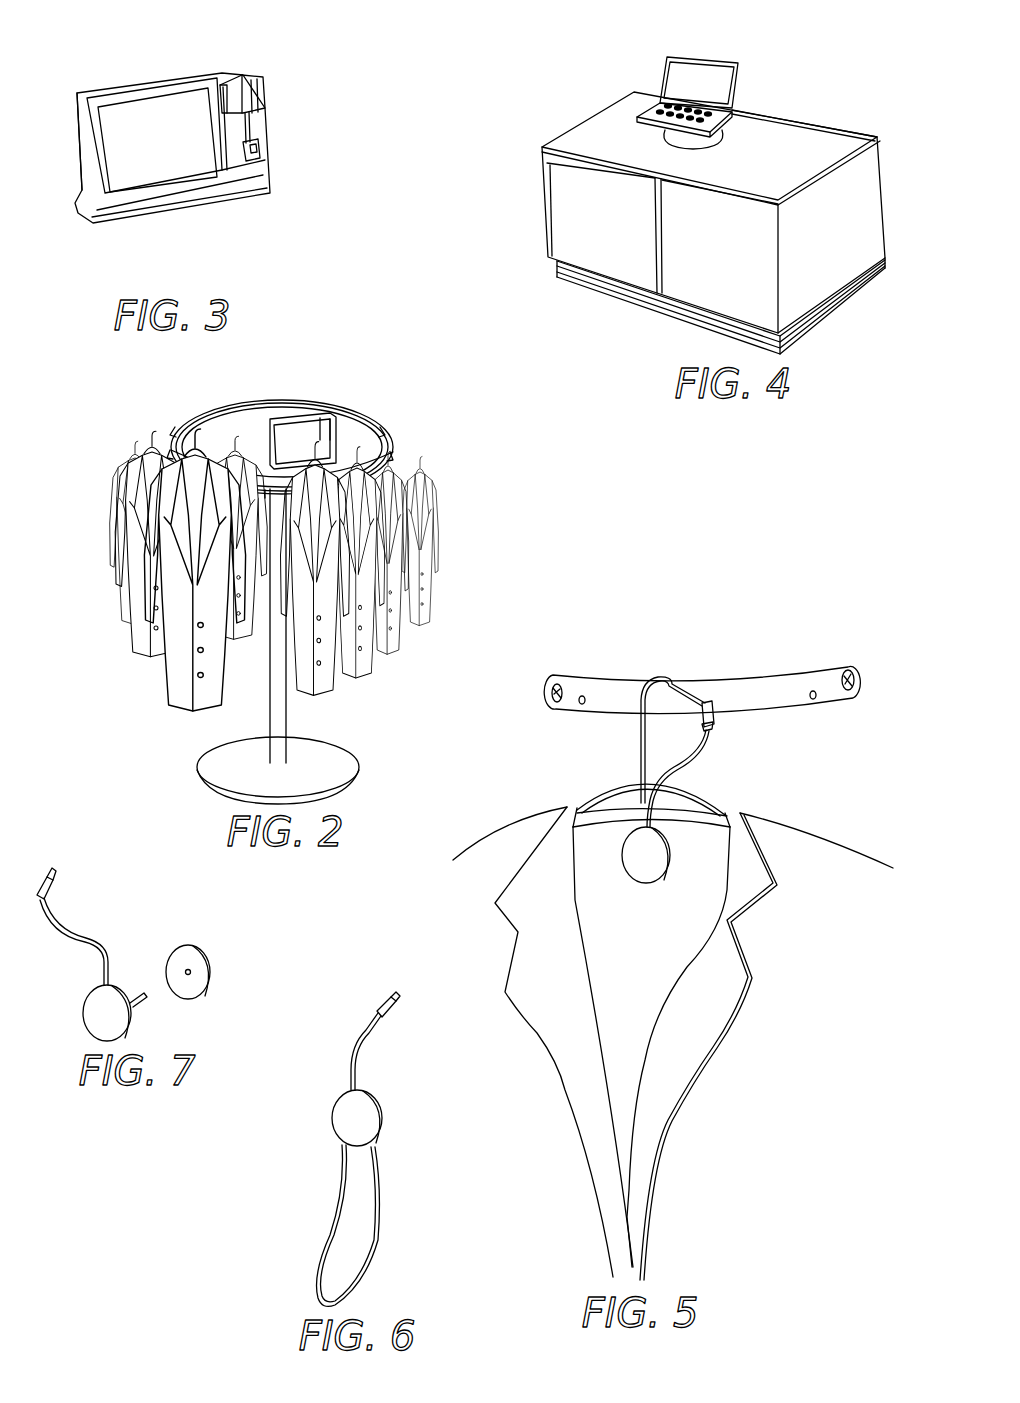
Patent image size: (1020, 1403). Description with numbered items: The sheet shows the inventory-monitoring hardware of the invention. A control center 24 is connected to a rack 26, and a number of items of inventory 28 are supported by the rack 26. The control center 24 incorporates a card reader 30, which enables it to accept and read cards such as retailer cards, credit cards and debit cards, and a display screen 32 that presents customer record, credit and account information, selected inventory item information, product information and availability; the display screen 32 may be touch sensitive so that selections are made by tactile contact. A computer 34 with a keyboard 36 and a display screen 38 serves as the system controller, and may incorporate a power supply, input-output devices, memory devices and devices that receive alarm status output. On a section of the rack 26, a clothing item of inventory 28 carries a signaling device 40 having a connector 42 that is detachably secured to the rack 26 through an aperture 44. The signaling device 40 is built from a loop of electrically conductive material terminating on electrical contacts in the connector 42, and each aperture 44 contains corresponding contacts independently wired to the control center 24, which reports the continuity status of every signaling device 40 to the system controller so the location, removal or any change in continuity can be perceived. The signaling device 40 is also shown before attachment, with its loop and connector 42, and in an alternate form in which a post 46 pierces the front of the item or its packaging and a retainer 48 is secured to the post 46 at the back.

In FIG. 3, the control center 24 is at (133, 225).
In FIG. 2, the control center 24 is at (302, 413).
In FIG. 2, the rack 26 is at (415, 430).
In FIG. 5, the rack 26 is at (702, 667).
In FIG. 2, the item of inventory 28 is at (193, 513).
In FIG. 5, the item of inventory 28 is at (810, 804).
In FIG. 3, the card reader 30 is at (290, 88).
In FIG. 3, the display screen 32 is at (168, 115).
In FIG. 4, the computer 34 is at (714, 45).
In FIG. 4, the keyboard 36 is at (628, 99).
In FIG. 4, the display screen 38 is at (675, 73).
In FIG. 5, the signaling device 40 is at (667, 768).
In FIG. 7, the signaling device 40 is at (88, 1008).
In FIG. 6, the signaling device 40 is at (380, 1210).
In FIG. 5, the connector 42 is at (715, 720).
In FIG. 7, the connector 42 is at (48, 880).
In FIG. 6, the connector 42 is at (387, 1015).
In FIG. 5, the aperture 44 is at (585, 697).
In FIG. 7, the post 46 is at (138, 1000).
In FIG. 7, the retainer 48 is at (200, 967).